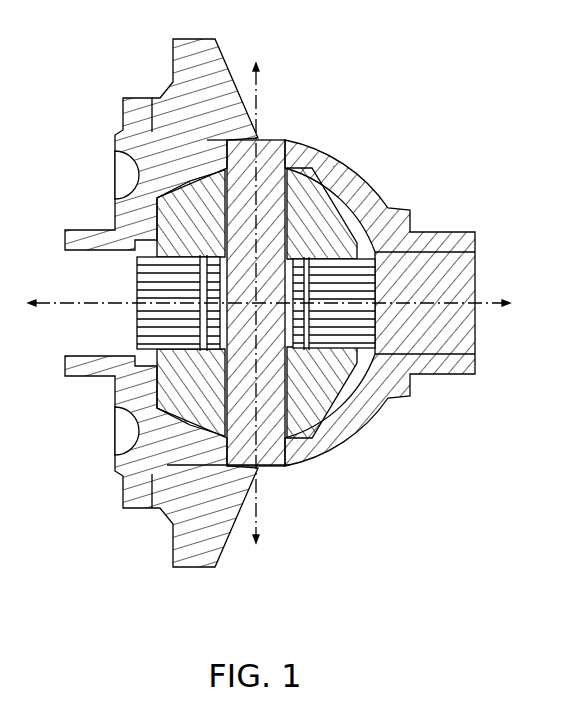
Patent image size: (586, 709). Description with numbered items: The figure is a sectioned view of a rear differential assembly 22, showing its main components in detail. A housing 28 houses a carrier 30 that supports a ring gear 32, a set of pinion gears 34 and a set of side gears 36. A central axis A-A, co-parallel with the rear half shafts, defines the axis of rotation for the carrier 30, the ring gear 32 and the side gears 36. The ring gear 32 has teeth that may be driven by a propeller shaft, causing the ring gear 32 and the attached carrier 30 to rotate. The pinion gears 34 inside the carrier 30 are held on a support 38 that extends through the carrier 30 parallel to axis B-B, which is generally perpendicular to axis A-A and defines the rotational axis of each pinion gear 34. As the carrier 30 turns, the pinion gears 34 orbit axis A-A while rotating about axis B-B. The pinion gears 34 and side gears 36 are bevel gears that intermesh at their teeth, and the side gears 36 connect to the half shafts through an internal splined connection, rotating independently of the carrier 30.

The differential assembly 22 is at (269, 304).
The housing 28 is at (128, 112).
The carrier 30 is at (393, 222).
The ring gear 32 is at (183, 538).
The set of pinion gears 34 is at (308, 190).
The set of side gears 36 is at (172, 236).
The support 38 is at (267, 440).